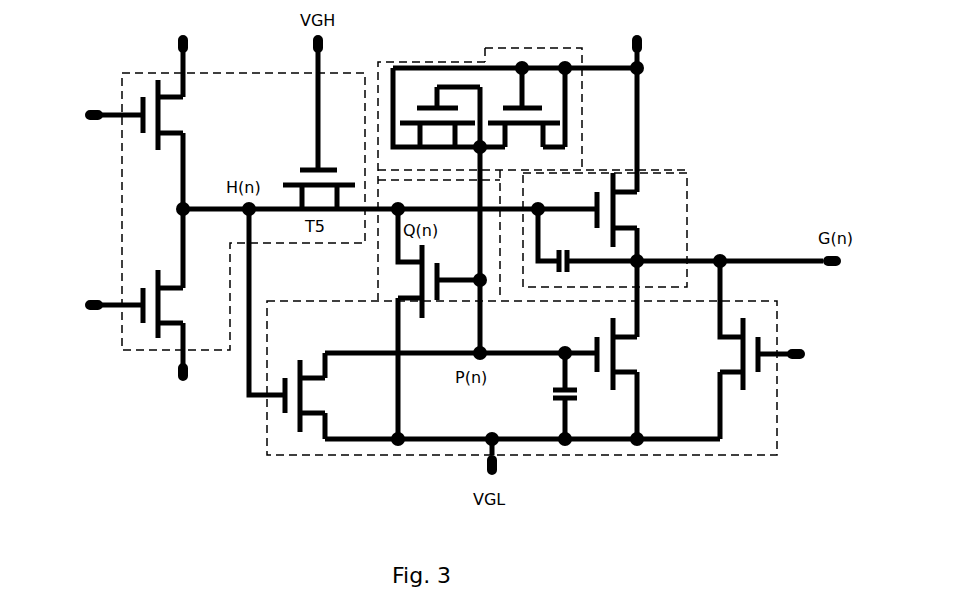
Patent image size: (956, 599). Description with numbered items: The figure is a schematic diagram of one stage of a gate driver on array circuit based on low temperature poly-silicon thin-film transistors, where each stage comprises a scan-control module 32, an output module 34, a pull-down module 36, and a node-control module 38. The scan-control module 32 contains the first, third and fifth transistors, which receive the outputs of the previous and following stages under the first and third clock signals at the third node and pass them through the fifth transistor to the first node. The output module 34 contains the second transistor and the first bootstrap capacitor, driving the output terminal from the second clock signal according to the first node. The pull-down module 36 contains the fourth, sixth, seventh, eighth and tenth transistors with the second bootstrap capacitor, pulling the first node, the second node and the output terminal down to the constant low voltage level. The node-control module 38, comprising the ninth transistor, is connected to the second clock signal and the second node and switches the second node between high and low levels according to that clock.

The scan-control module 32 is at (135, 350).
The output module 34 is at (687, 210).
The pull-down module 36 is at (592, 456).
The node-control module 38 is at (428, 62).